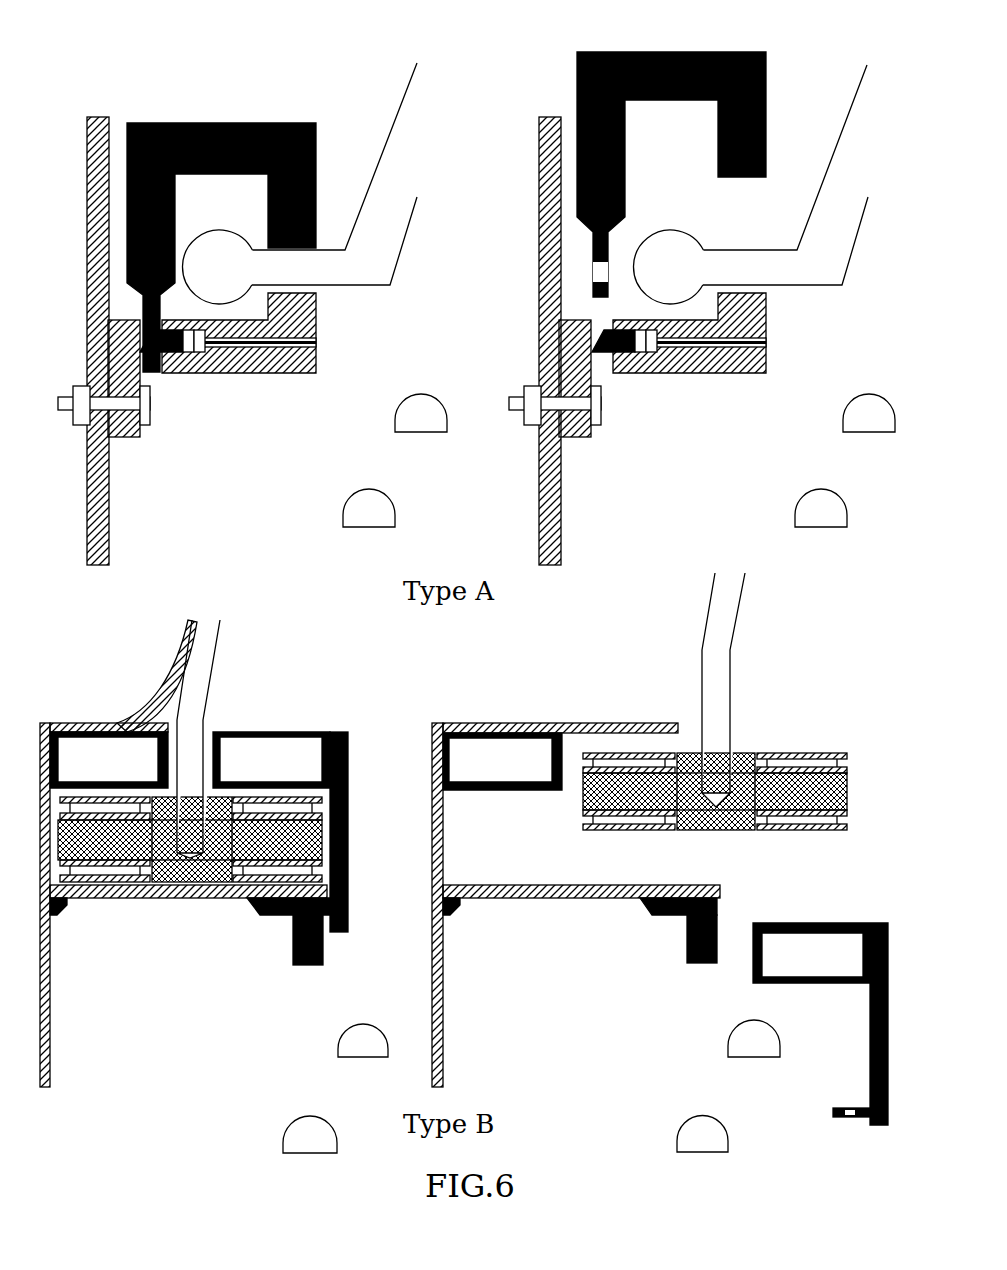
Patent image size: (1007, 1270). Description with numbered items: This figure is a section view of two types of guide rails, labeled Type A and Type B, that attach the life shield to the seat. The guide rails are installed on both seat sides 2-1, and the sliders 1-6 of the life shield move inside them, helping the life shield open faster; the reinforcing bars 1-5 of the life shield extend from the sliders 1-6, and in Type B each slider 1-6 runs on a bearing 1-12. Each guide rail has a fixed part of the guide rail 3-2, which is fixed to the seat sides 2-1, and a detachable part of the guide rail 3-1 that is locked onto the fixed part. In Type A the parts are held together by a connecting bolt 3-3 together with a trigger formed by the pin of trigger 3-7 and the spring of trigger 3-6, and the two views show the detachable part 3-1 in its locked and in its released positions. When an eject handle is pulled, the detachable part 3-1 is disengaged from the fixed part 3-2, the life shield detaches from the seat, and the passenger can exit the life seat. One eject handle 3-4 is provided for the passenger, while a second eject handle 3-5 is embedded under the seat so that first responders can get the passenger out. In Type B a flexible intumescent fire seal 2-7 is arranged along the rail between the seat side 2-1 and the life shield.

The seat sides 2-1 is at (99, 117).
The detachable part of the guide rail 3-1 is at (258, 123).
The fixed part of guide rail 3-2 is at (280, 363).
The connecting bolt 3-3 is at (150, 403).
The eject handle for the passenger 3-4 is at (316, 340).
The eject handle for first responders 3-5 is at (316, 345).
The spring of trigger 3-6 is at (195, 352).
The pin of trigger 3-7 is at (165, 352).
The sliders 1-6 is at (220, 256).
The reinforcing bars 1-5 is at (392, 232).
The flexible intumescent fire seal 2-7 is at (162, 697).
The bearing 1-12 is at (240, 898).